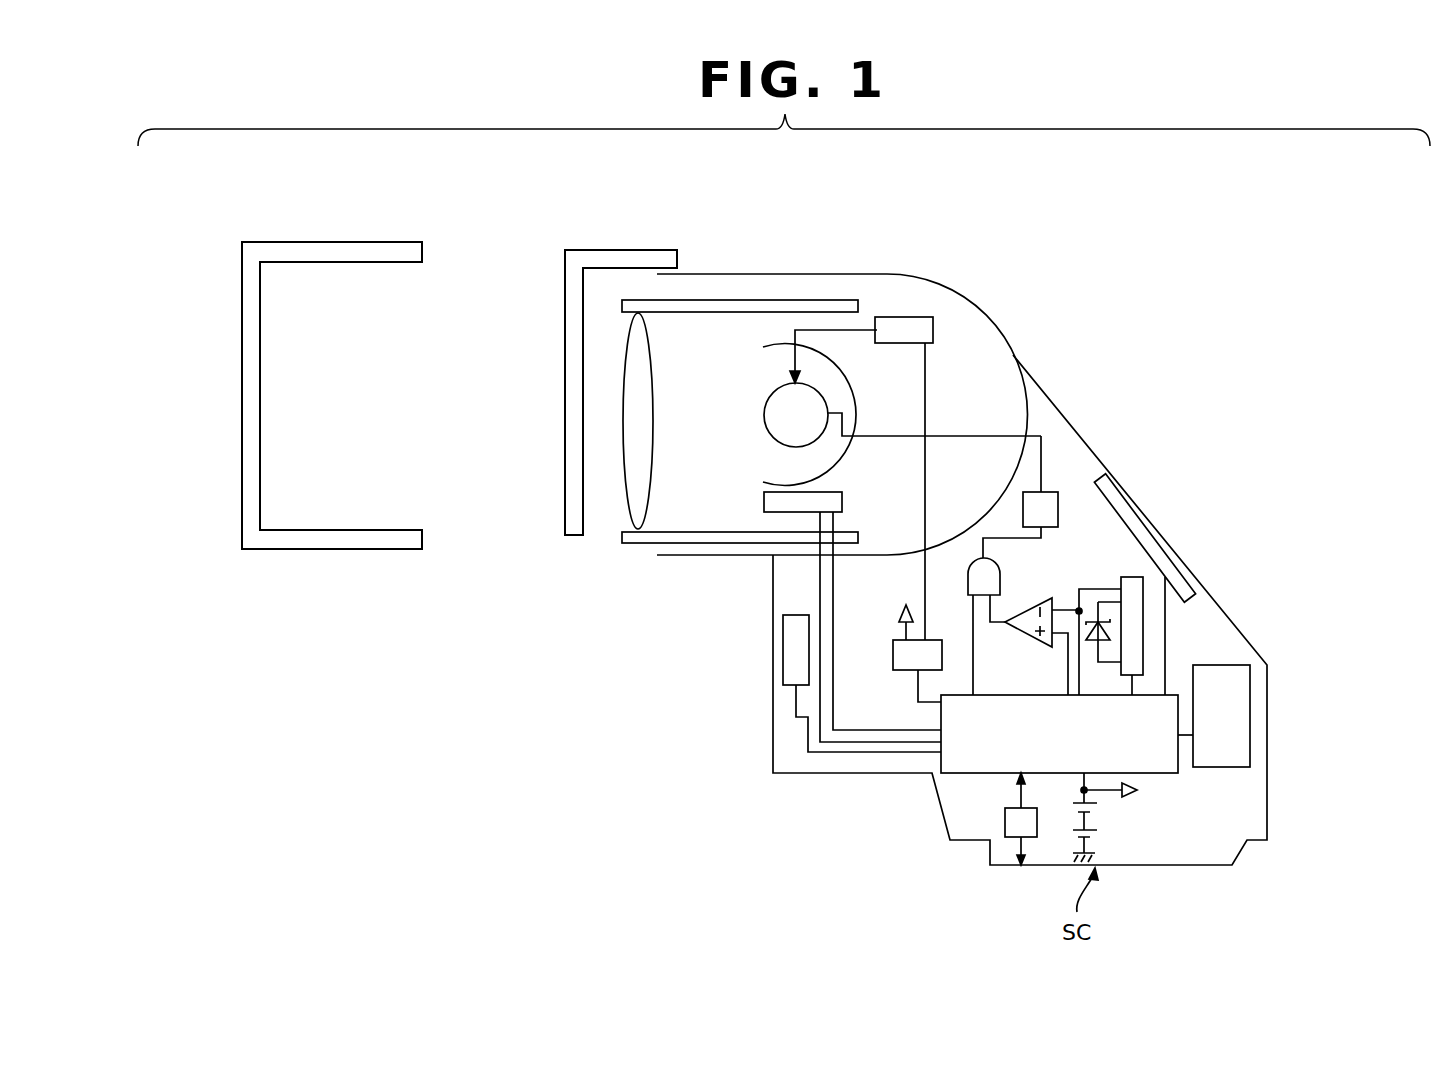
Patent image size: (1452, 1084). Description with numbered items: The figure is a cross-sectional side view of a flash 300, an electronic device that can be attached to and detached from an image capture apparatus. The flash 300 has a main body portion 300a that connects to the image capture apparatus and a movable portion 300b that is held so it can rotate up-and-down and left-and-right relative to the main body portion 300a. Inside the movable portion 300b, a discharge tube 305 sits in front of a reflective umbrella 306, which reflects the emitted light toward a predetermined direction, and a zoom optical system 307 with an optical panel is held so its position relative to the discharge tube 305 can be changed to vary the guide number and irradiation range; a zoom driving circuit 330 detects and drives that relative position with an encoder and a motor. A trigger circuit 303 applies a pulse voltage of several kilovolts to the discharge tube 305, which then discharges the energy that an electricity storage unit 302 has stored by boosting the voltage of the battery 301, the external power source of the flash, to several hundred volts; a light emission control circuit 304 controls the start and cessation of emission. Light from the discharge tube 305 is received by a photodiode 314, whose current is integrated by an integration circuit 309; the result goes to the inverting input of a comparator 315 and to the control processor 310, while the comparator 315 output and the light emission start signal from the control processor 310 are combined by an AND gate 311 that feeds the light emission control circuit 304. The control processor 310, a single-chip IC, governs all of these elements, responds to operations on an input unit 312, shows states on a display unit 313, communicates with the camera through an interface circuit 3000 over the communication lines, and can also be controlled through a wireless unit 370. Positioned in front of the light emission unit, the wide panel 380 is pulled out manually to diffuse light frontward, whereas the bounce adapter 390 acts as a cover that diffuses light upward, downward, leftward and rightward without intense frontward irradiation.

The flash 300 is at (1187, 303).
The main body portion 300a is at (1268, 745).
The movable portion 300b is at (887, 272).
The battery 301 is at (1098, 838).
The electricity storage unit 302 is at (893, 665).
The trigger circuit 303 is at (912, 317).
The light emission control circuit 304 is at (1050, 490).
The discharge tube 305 is at (787, 417).
The reflective umbrella 306 is at (775, 347).
The zoom optical system 307 is at (631, 506).
The integration circuit 309 is at (1145, 648).
The control processor 310 is at (1166, 774).
The AND gate 311 is at (1000, 577).
The input unit 312 is at (1240, 683).
The display unit 313 is at (1187, 590).
The photodiode 314 is at (1099, 622).
The comparator 315 is at (1040, 603).
The zoom driving circuit 330 is at (773, 513).
The wireless unit 370 is at (783, 657).
The wide panel 380 is at (556, 358).
The bounce adapter 390 is at (232, 358).
The interface circuit 3000 is at (1005, 817).